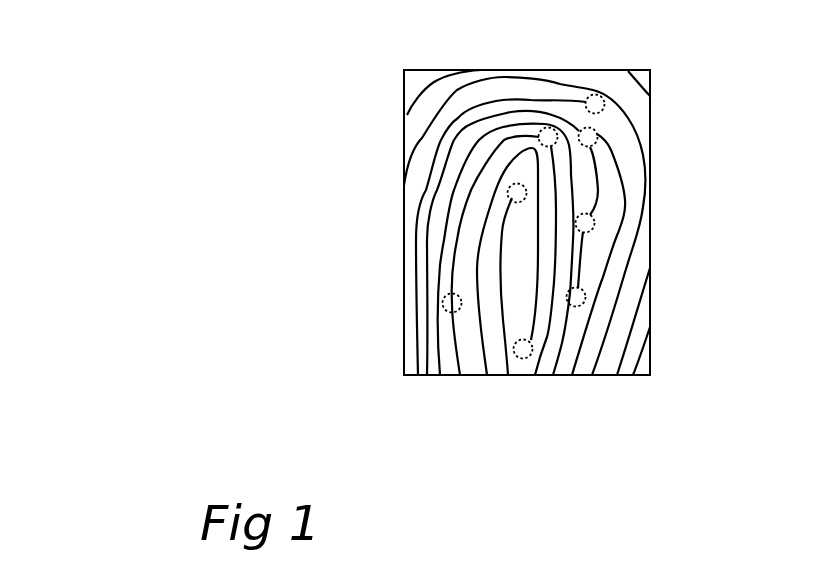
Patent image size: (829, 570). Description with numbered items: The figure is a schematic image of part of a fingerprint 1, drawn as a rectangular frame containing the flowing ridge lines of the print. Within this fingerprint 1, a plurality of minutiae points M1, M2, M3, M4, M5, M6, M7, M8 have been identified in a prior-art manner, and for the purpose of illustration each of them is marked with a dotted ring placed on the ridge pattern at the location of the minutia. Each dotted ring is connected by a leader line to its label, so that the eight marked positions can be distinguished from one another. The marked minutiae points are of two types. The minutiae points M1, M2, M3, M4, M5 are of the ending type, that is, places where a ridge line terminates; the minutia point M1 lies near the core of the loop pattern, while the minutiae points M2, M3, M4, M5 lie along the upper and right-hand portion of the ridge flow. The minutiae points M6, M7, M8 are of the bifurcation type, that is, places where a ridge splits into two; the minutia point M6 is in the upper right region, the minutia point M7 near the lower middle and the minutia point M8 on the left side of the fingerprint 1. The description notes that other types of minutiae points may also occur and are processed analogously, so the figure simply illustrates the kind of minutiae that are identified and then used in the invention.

The fingerprint 1 is at (362, 107).
The minutia point M1 is at (512, 190).
The minutia point M2 is at (596, 131).
The minutia point M3 is at (593, 219).
The minutia point M4 is at (583, 292).
The minutia point M5 is at (545, 128).
The minutia point M6 is at (603, 100).
The minutia point M7 is at (526, 358).
The minutia point M8 is at (443, 303).